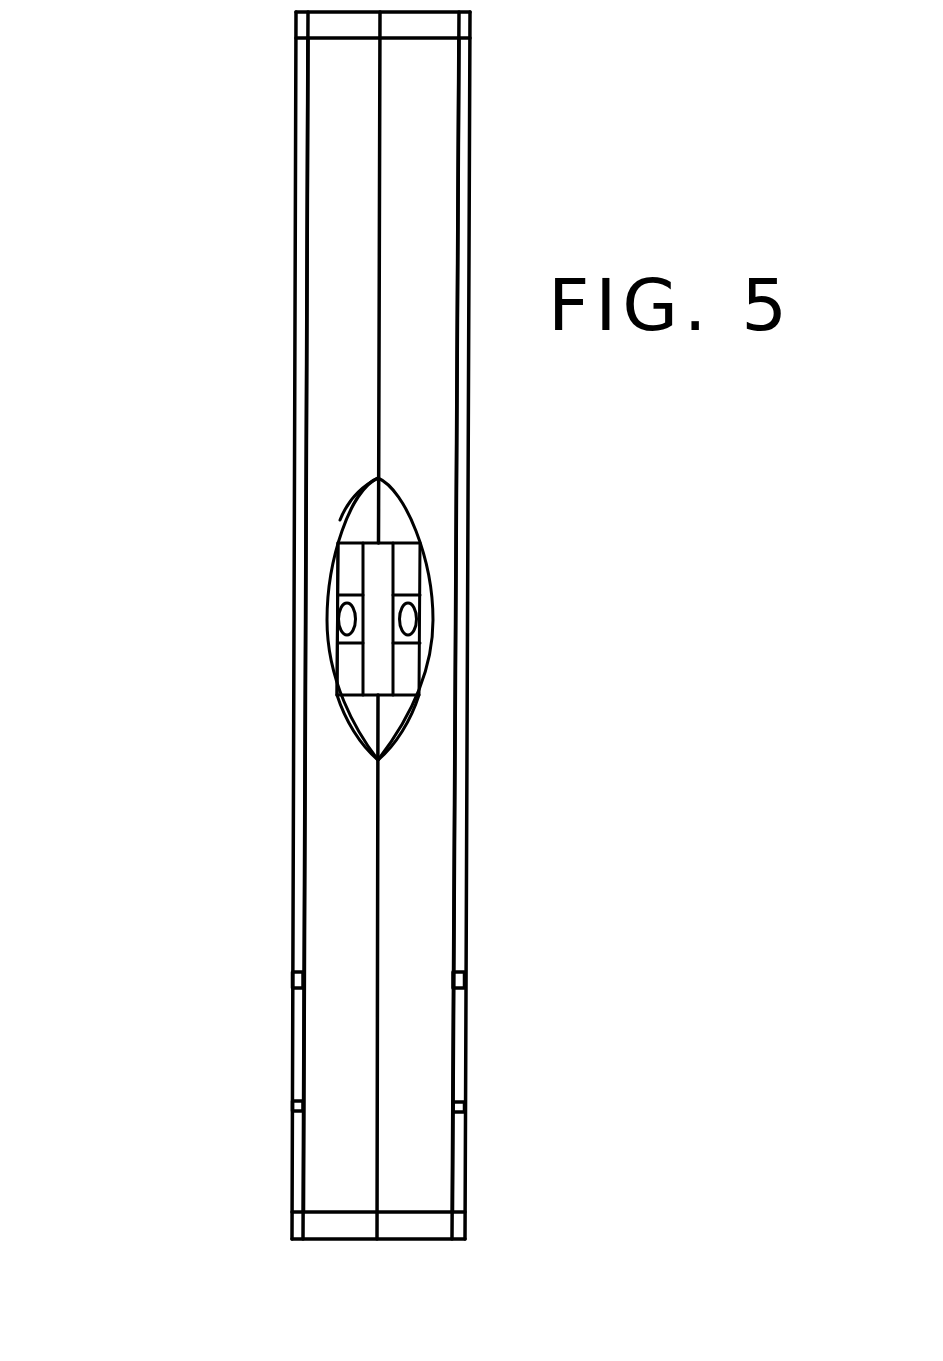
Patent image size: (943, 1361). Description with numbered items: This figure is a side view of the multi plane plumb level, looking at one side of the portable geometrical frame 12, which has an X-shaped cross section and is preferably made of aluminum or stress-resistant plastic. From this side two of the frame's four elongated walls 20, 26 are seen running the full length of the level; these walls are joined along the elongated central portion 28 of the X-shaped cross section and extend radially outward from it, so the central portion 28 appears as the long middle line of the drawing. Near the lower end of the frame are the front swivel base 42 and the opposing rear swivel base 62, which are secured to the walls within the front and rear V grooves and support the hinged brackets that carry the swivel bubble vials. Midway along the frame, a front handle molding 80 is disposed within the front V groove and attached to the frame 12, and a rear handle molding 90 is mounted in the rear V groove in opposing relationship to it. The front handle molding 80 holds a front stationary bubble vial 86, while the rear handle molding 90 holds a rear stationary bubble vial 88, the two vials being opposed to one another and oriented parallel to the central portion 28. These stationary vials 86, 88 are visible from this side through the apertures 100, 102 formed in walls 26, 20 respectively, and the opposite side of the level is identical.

The geometrical frame 12 is at (470, 923).
The elongated wall 20 is at (341, 165).
The elongated wall 26 is at (435, 170).
The elongated central portion 28 is at (413, 583).
The front swivel base 42 is at (292, 1110).
The rear swivel base 62 is at (465, 1108).
The front handle molding 80 is at (358, 729).
The front stationary bubble vial 86 is at (350, 672).
The rear stationary bubble vial 88 is at (410, 675).
The rear handle molding 90 is at (403, 727).
The aperture 100 is at (408, 510).
The aperture 102 is at (352, 508).